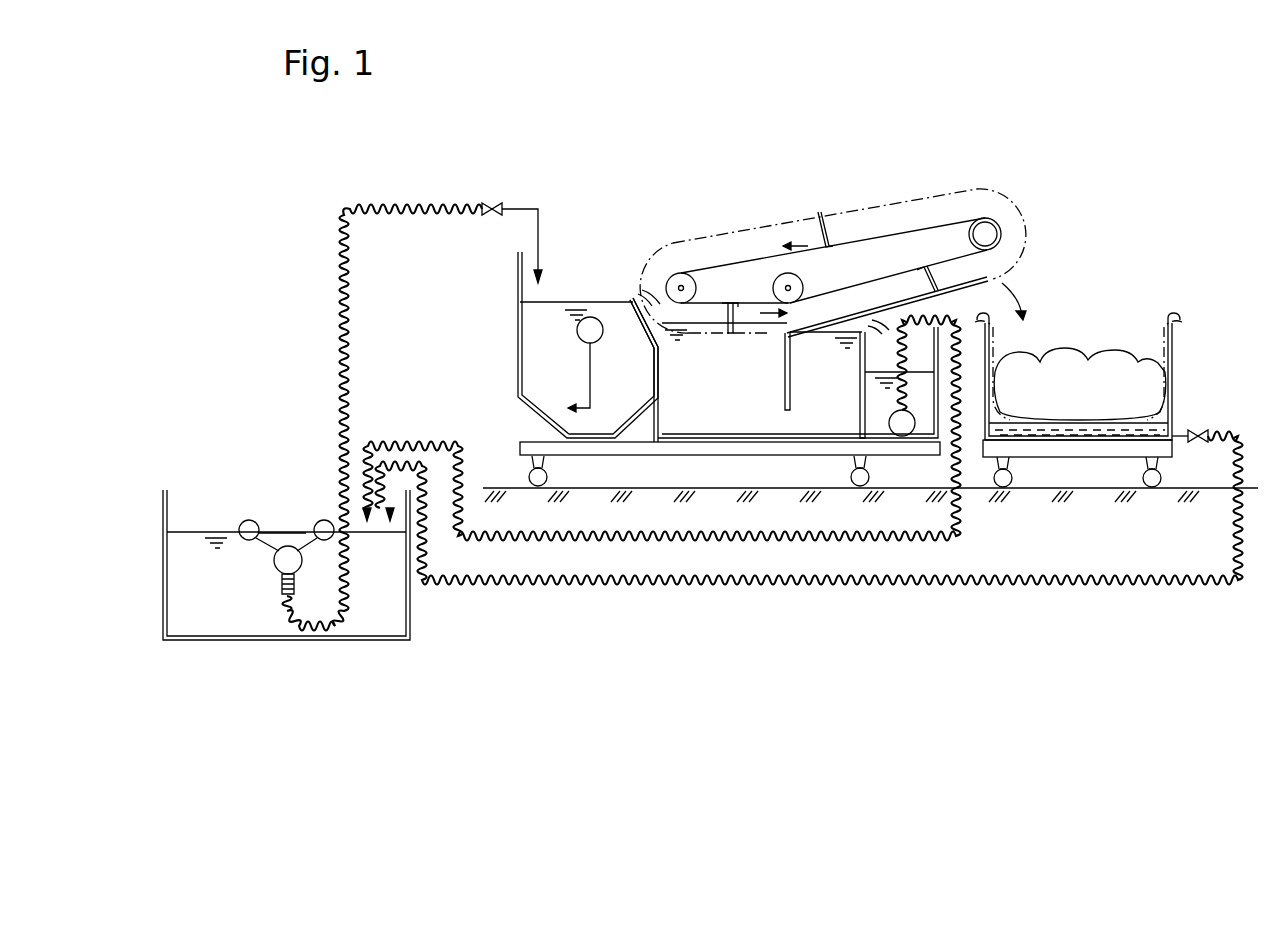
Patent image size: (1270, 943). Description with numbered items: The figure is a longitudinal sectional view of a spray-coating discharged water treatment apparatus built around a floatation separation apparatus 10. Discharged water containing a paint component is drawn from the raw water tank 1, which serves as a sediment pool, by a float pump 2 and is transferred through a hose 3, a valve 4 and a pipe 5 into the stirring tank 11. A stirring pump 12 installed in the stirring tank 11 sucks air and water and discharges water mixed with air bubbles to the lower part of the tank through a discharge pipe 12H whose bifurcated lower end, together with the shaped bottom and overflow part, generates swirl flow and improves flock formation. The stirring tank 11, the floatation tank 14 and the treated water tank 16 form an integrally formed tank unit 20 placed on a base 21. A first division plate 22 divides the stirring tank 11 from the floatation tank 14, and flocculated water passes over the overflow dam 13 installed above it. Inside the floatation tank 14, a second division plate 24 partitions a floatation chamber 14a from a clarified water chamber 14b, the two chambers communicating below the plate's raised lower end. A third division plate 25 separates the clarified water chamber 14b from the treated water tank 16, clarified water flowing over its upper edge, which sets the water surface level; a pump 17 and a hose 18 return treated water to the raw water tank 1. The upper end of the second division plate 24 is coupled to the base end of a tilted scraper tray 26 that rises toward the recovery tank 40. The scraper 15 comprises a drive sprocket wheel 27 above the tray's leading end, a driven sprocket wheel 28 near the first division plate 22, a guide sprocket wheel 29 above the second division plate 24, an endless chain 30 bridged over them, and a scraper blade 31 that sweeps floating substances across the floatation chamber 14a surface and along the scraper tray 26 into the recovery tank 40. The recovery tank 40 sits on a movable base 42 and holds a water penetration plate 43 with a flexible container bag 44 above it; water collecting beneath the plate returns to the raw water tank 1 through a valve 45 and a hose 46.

The raw water tank 1 is at (268, 648).
The float pump 2 is at (274, 566).
The hose 3 is at (340, 333).
The valve 4 is at (493, 200).
The pipe 5 is at (540, 238).
The floatation separation apparatus 10 is at (735, 157).
The stirring tank 11 is at (520, 347).
The stirring pump 12 is at (586, 345).
The discharge pipe 12H is at (592, 410).
The overflow dam 13 is at (641, 330).
The floatation tank 14 is at (718, 446).
The floatation chamber 14a is at (672, 445).
The clarified water chamber 14b is at (816, 445).
The scraper 15 is at (857, 199).
The treated water tank 16 is at (888, 445).
The pump 17 is at (912, 412).
The hose 18 is at (962, 530).
The tank unit 20 is at (760, 448).
The base 21 is at (518, 448).
The first division plate 22 is at (655, 370).
The second division plate 24 is at (784, 385).
The third division plate 25 is at (858, 400).
The scraper tray 26 is at (960, 290).
The drive sprocket wheel 27 is at (968, 236).
The driven sprocket wheel 28 is at (690, 280).
The guide sprocket wheel 29 is at (803, 285).
The chain 30 is at (882, 238).
The scraper blade 31 is at (820, 210).
The recovery tank 40 is at (1176, 398).
The movable base 42 is at (1065, 452).
The water penetration plate 43 is at (1170, 425).
The flexible container bag 44 is at (1165, 320).
The valve 45 is at (1200, 446).
The hose 46 is at (1165, 592).